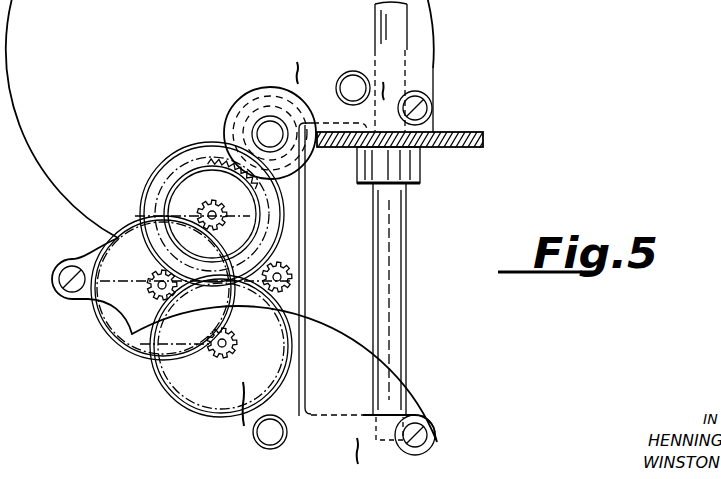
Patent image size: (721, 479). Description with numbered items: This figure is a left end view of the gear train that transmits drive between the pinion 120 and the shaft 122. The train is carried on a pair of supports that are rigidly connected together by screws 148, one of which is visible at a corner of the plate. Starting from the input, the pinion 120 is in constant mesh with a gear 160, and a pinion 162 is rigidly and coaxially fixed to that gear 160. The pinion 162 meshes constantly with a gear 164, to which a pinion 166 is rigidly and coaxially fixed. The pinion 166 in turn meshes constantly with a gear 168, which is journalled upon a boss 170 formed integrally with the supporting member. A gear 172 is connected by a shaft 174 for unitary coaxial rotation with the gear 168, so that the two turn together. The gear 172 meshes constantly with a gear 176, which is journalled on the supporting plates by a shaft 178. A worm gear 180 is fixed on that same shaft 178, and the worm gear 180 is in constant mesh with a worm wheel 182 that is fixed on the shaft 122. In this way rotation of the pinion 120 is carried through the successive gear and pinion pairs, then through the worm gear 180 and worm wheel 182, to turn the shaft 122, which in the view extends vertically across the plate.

The pinion 120 is at (291, 288).
The shaft 122 is at (407, 235).
The screws 148 is at (428, 430).
The gear 160 is at (292, 340).
The pinion 162 is at (236, 352).
The gear 164 is at (114, 344).
The pinion 166 is at (146, 284).
The gear 168 is at (278, 222).
The boss 170 is at (196, 228).
The gear 172 is at (168, 175).
The shaft 174 is at (219, 188).
The gear 176 is at (225, 127).
The shaft 178 is at (272, 122).
The worm gear 180 is at (250, 88).
The worm wheel 182 is at (484, 139).